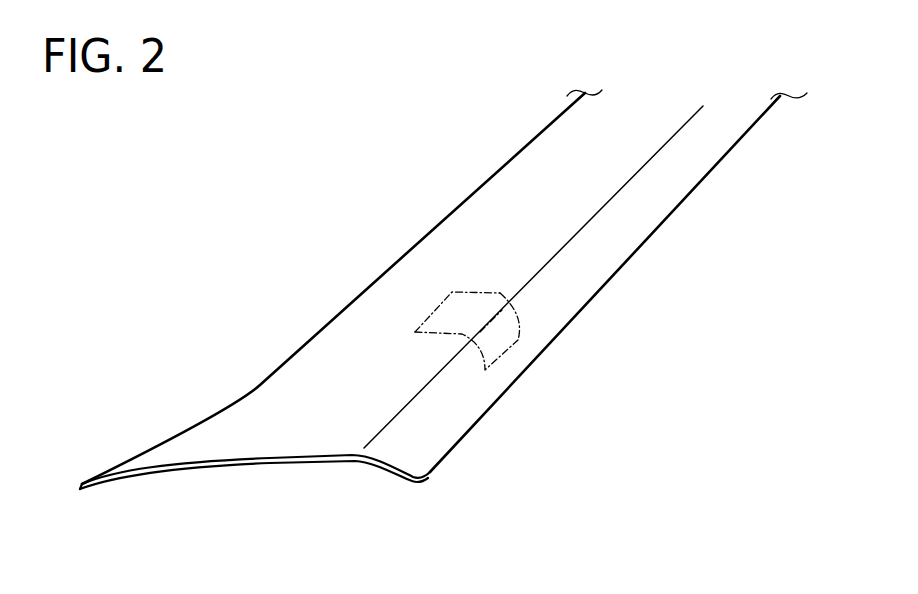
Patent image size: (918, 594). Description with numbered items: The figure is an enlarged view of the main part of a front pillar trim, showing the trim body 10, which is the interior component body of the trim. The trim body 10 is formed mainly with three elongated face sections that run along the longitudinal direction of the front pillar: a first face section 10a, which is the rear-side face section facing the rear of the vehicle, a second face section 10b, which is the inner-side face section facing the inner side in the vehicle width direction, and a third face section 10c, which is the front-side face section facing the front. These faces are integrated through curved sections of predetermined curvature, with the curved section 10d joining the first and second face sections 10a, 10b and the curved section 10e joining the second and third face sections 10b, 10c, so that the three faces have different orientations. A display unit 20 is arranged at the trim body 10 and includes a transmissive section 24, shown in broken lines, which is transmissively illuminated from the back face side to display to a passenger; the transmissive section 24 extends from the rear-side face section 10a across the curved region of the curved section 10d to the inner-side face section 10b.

The trim body 10 is at (352, 345).
The first face section 10a is at (603, 260).
The second face section 10b is at (577, 168).
The third face section 10c is at (113, 476).
The curved section 10d is at (535, 277).
The curved section 10e is at (470, 202).
The display unit 20 is at (545, 359).
The transmissive section 24 is at (515, 342).